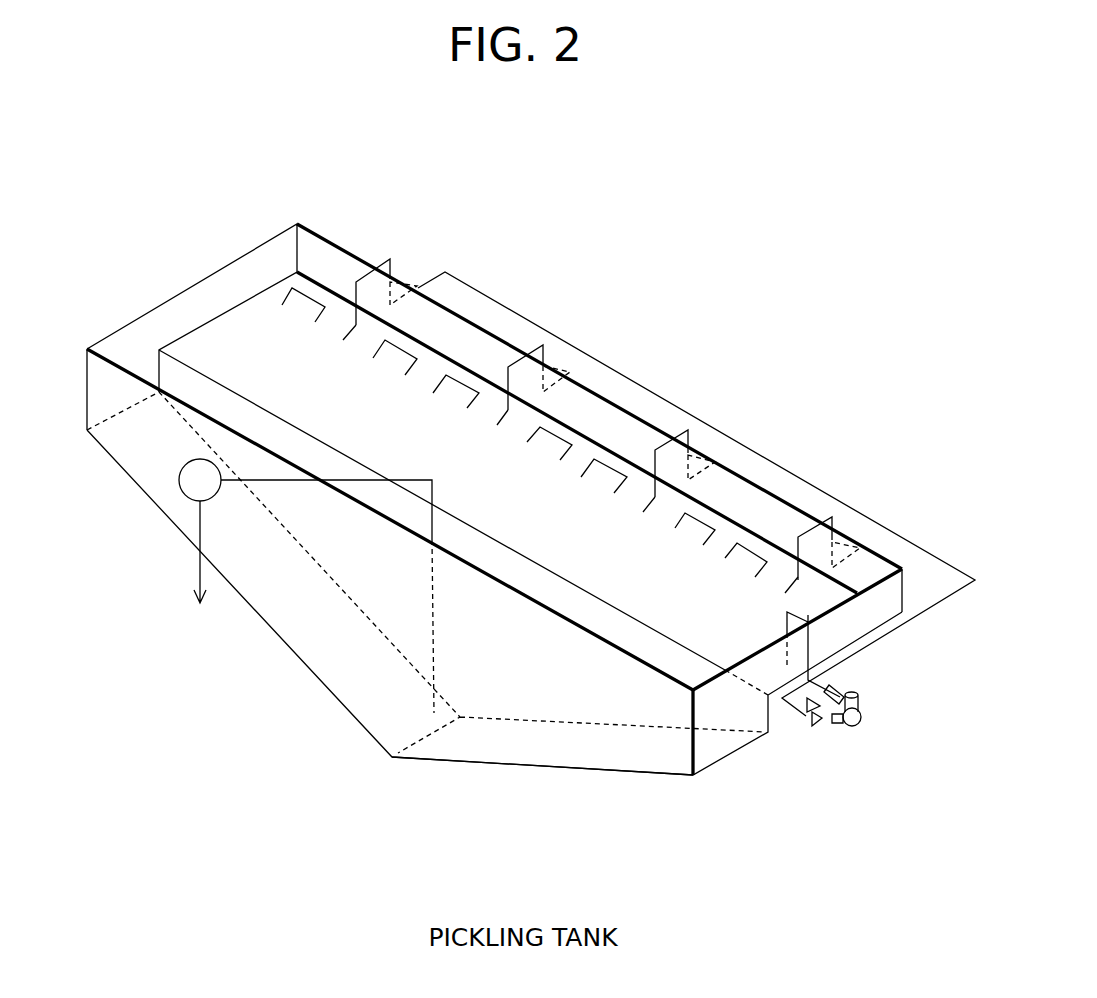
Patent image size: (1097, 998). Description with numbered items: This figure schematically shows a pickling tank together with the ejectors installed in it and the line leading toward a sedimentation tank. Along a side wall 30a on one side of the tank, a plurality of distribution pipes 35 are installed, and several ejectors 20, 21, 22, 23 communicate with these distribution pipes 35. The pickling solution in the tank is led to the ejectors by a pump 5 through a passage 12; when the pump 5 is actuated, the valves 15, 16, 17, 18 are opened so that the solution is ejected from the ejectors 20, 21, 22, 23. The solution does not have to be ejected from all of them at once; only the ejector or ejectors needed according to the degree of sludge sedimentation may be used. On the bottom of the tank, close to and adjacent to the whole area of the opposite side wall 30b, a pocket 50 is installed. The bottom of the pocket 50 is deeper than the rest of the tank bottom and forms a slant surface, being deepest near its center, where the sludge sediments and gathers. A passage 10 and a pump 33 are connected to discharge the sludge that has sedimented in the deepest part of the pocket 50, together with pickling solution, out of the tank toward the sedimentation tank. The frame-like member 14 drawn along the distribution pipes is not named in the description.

The pump 5 is at (864, 708).
The passage 10 is at (200, 565).
The passage 12 is at (787, 618).
The frame 14 is at (922, 613).
The valve 15 is at (415, 283).
The valve 16 is at (562, 370).
The valve 17 is at (708, 450).
The valve 18 is at (850, 537).
The ejector 20 is at (353, 326).
The ejector 21 is at (527, 443).
The ejector 22 is at (675, 528).
The ejector 23 is at (763, 567).
The side wall 30a is at (317, 248).
The side wall 30b is at (603, 706).
The pump 33 is at (184, 466).
The distribution pipe 35 is at (313, 322).
The pocket 50 is at (458, 752).